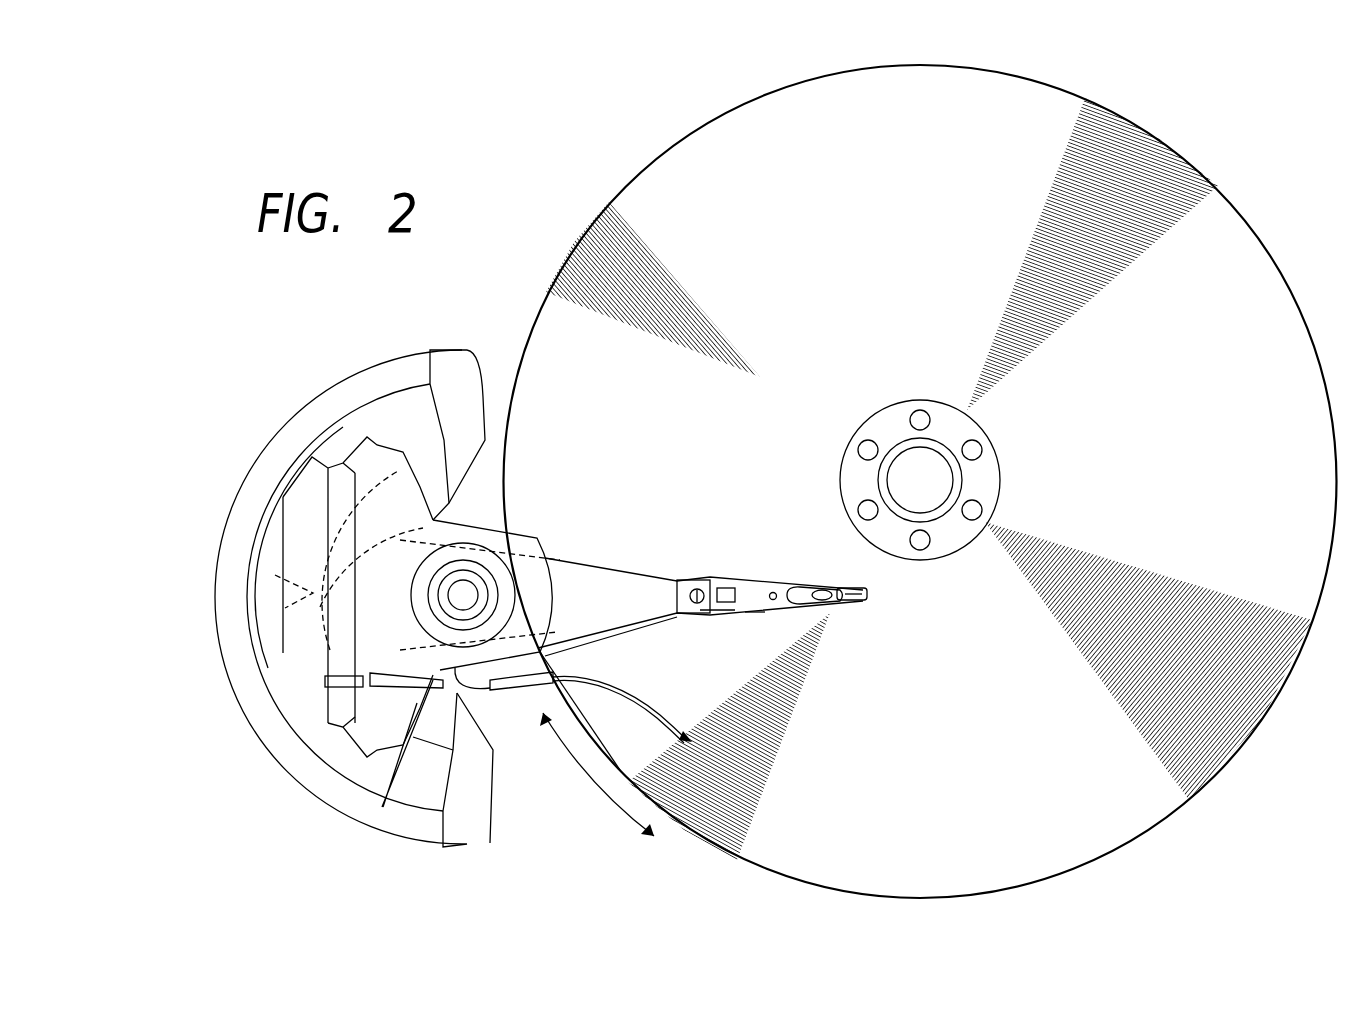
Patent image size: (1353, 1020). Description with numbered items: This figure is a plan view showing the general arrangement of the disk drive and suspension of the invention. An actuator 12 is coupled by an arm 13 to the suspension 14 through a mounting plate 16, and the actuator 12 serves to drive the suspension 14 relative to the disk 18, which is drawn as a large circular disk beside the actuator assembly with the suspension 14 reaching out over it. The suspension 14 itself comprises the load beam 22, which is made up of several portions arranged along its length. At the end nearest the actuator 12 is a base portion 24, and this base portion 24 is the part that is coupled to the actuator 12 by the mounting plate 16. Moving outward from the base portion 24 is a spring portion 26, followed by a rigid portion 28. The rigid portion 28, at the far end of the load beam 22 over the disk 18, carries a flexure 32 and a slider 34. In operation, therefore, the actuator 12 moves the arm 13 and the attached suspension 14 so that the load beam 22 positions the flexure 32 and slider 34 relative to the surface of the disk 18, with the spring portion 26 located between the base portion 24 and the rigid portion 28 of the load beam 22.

The actuator 12 is at (282, 422).
The arm 13 is at (583, 578).
The suspension 14 is at (735, 578).
The mounting plate 16 is at (695, 590).
The disk 18 is at (1085, 825).
The load beam 22 is at (755, 606).
The base portion 24 is at (703, 586).
The spring portion 26 is at (720, 611).
The rigid portion 28 is at (812, 648).
The flexure 32 is at (847, 590).
The slider 34 is at (853, 600).